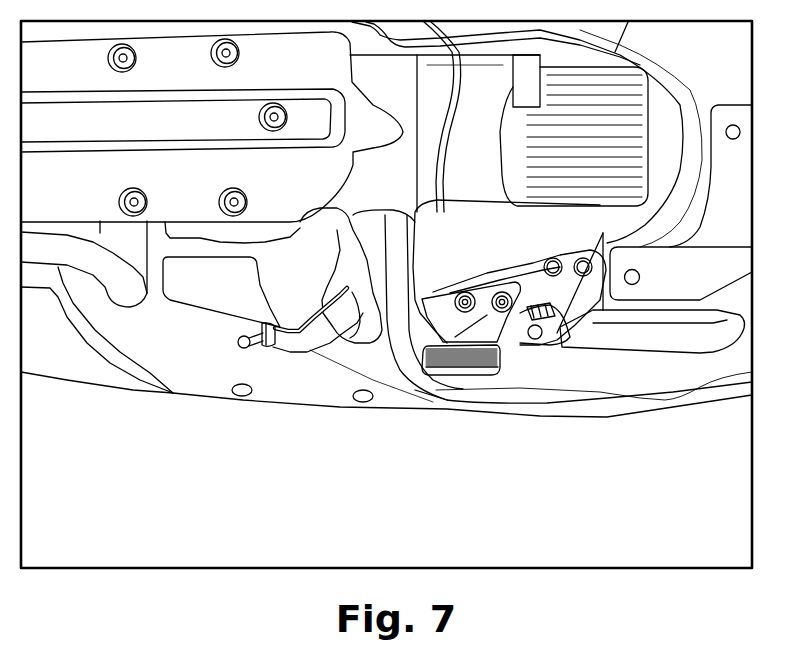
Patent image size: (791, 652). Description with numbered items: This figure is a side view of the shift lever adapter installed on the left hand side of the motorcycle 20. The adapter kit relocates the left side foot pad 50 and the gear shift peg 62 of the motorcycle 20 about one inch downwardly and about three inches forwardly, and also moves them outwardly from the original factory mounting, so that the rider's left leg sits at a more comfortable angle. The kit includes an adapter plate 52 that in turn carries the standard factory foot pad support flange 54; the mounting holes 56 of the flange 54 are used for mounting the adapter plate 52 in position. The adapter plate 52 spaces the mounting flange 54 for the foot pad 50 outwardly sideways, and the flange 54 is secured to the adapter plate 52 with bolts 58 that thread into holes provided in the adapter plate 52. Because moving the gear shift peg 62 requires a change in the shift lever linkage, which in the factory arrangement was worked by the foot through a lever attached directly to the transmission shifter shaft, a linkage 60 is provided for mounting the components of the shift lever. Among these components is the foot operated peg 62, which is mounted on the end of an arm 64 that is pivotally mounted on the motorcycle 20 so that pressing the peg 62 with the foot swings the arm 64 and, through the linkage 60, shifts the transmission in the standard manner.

The motorcycle 20 is at (147, 350).
The foot pad 50 is at (470, 377).
The adapter plate 52 is at (583, 258).
The foot pad support flange 54 is at (508, 290).
The flange mounting hole 56 is at (553, 258).
The bolts 58 is at (492, 297).
The linkage 60 is at (360, 327).
The gear shift peg 62 is at (245, 348).
The arm 64 is at (320, 333).